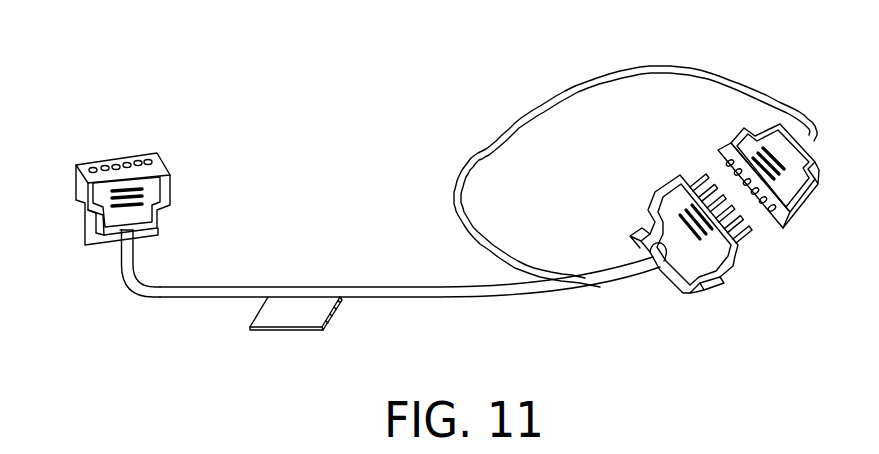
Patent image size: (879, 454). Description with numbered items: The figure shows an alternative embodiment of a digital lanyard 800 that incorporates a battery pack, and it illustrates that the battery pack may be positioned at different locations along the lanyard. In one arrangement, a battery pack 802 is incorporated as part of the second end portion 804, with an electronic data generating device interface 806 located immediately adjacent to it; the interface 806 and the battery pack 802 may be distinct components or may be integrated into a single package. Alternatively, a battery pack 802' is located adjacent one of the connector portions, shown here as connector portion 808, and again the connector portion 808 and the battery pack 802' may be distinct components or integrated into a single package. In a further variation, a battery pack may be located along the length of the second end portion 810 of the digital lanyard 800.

The digital lanyard 800 is at (163, 55).
The battery pack 802 is at (99, 198).
The battery pack 802' is at (690, 259).
The second end portion 804 is at (190, 298).
The electronic data generating device interface 806 is at (148, 153).
The connector portion 808 is at (746, 242).
The second end portion 810 is at (498, 298).